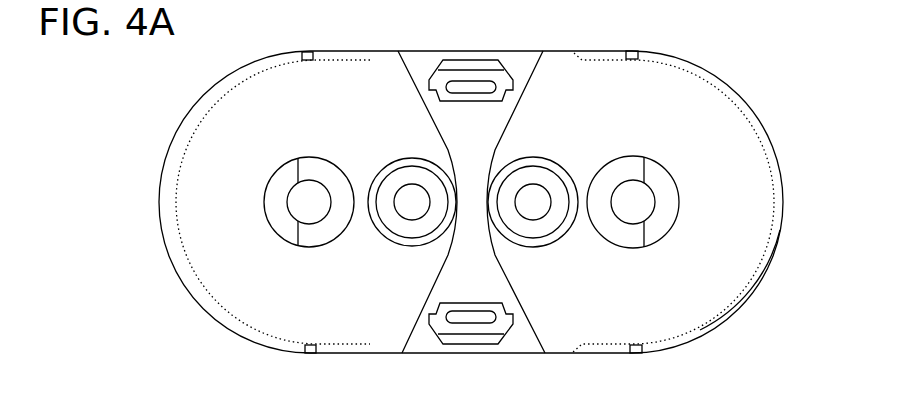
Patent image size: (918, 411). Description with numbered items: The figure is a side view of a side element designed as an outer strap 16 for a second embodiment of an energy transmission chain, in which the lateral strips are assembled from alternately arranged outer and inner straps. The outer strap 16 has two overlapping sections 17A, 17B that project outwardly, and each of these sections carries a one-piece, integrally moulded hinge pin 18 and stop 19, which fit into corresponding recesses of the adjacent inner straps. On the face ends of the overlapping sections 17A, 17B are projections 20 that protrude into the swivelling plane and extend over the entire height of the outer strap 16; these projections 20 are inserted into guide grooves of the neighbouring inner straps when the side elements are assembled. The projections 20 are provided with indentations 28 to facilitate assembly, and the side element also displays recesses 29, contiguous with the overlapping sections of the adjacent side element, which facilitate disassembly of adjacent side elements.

The outer strap 16 is at (228, 351).
The overlapping section 17A is at (277, 102).
The overlapping section 17B is at (672, 103).
The hinge pin 18 is at (628, 198).
The stop 19 is at (534, 198).
The projection 20 is at (165, 233).
The indentation 28 is at (741, 307).
The recess 29 is at (633, 349).